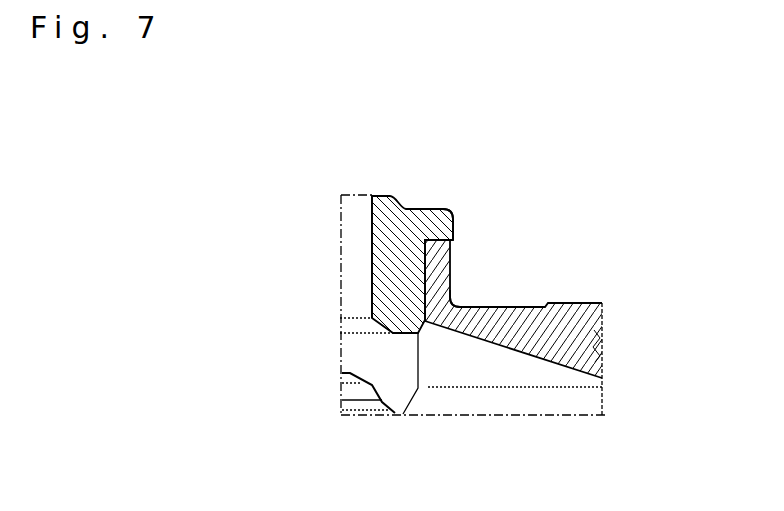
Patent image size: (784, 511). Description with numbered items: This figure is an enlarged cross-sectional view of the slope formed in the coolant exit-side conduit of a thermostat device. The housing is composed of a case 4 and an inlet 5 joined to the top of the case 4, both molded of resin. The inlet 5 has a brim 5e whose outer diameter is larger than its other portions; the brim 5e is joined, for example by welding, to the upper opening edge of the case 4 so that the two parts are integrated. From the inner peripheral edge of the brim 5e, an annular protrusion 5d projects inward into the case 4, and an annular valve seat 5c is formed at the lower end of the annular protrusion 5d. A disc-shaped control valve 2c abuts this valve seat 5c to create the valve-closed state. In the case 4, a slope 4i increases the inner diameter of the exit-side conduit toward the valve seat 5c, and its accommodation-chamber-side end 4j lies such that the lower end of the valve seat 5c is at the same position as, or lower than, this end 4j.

The inlet 5 is at (423, 209).
The brim 5e is at (452, 212).
The annular protrusion 5d is at (372, 300).
The valve seat 5c is at (376, 334).
The case 4 is at (581, 302).
The accommodation-chamber-side end 4j is at (437, 338).
The slope 4i is at (527, 357).
The control valve 2c is at (370, 391).